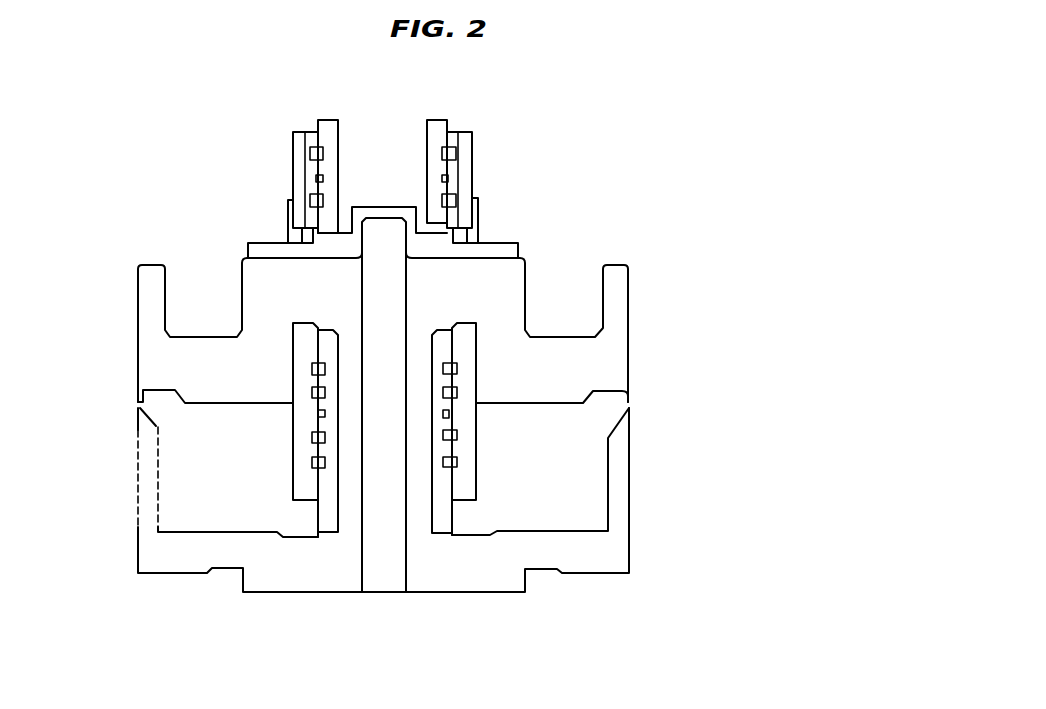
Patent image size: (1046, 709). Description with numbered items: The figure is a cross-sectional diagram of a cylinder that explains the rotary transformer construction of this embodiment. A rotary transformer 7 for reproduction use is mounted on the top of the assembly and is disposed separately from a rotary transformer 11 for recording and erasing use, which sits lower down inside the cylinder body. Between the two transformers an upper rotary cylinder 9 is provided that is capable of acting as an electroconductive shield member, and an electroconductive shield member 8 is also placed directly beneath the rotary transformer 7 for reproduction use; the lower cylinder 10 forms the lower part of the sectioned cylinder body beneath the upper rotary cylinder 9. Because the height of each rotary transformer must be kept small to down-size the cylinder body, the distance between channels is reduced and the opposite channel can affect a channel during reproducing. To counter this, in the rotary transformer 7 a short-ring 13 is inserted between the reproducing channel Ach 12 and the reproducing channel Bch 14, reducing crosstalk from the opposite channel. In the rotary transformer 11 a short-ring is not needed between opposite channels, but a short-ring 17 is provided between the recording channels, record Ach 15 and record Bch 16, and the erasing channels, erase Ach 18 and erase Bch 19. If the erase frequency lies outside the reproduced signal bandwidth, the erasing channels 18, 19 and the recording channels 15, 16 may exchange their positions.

The rotary transformer for reproduction use 7 is at (455, 133).
The electroconductive shield member 8 is at (506, 243).
The upper rotary cylinder 9 is at (613, 264).
The lower cylinder 10 is at (630, 488).
The rotary transformer for recording and erasing use 11 is at (476, 447).
The reproducing channel Ach 12 is at (310, 153).
The short-ring 13 is at (316, 178).
The reproducing channel Bch 14 is at (310, 203).
The record Ach 15 is at (312, 370).
The record Bch 16 is at (312, 392).
The short-ring 17 is at (318, 414).
The erase Ach 18 is at (313, 437).
The erase Bch 19 is at (312, 463).